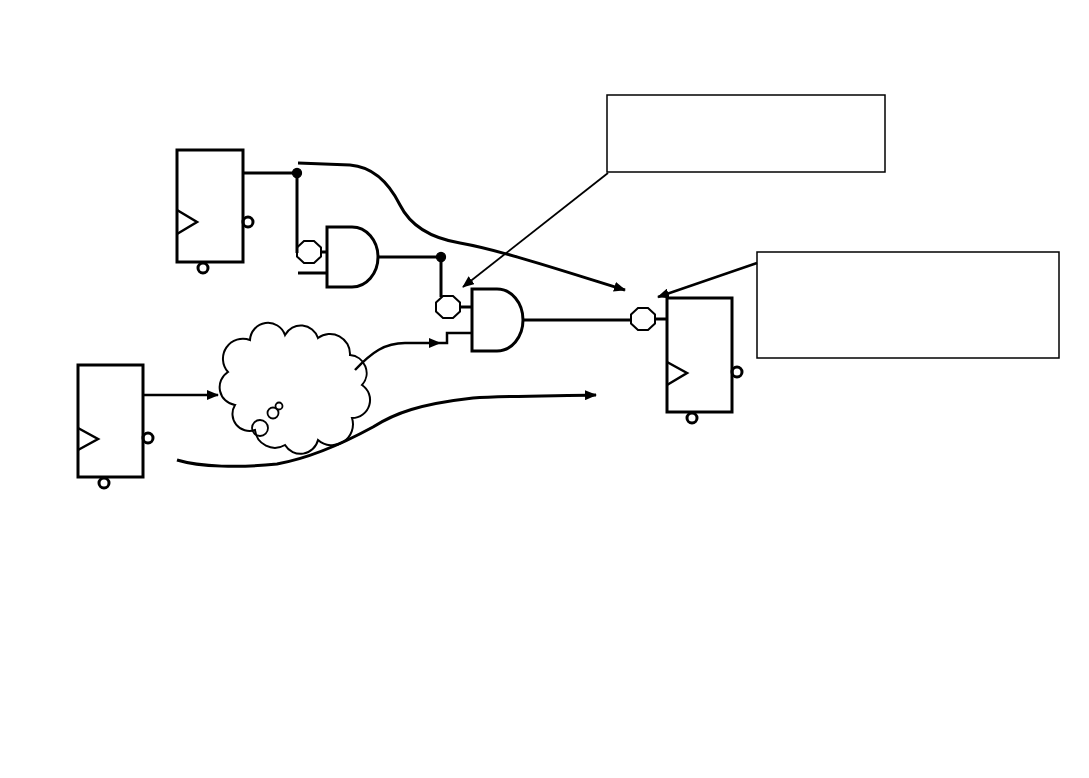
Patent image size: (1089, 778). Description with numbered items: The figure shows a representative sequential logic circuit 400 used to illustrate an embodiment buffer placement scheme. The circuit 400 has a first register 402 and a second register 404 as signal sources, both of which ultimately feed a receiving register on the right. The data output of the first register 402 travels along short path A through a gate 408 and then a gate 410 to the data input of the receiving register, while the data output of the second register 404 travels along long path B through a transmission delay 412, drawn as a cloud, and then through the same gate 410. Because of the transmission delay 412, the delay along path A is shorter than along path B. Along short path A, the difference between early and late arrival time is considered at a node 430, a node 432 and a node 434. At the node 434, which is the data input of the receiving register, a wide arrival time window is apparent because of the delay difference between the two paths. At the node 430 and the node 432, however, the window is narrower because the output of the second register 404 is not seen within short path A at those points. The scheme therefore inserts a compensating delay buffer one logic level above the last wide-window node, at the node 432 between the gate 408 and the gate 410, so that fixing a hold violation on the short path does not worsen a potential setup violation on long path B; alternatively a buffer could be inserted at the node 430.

The sequential logic circuit 400 is at (228, 52).
The first register 402 is at (212, 148).
The second register 404 is at (120, 356).
The gate 408 is at (351, 219).
The gate 410 is at (508, 314).
The transmission delay 412 is at (315, 387).
The node 430 is at (297, 253).
The node 432 is at (437, 300).
The node 434 is at (642, 304).